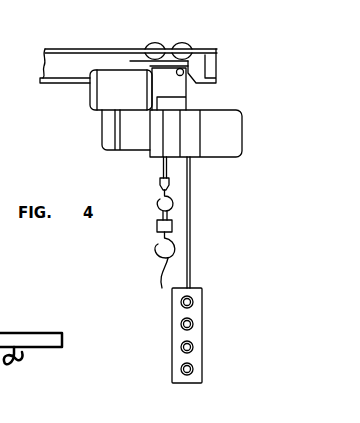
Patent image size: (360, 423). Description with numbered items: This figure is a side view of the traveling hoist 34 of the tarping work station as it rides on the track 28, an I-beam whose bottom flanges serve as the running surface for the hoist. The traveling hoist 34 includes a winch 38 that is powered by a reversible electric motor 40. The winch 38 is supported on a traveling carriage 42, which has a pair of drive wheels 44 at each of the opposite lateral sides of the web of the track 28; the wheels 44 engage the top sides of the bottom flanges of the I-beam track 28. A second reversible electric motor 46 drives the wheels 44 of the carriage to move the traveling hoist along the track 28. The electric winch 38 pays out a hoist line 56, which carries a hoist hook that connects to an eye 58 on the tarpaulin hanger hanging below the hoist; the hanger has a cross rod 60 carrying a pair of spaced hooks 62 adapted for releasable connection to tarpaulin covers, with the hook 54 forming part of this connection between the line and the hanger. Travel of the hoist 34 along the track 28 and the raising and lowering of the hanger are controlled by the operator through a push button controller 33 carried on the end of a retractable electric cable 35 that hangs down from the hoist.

The track 28 is at (82, 50).
The push button controller 33 is at (172, 352).
The traveling hoist 34 is at (80, 90).
The retractable electric cable 35 is at (191, 210).
The winch 38 is at (192, 118).
The reversible electric motor 40 is at (235, 114).
The traveling carriage 42 is at (209, 50).
The drive wheels 44 is at (180, 47).
The reversible electric motor 46 is at (94, 106).
The hook 54 is at (161, 198).
The hoist line 56 is at (158, 169).
The eye 58 is at (157, 214).
The cross rod 60 is at (156, 240).
The hooks 62 is at (167, 272).